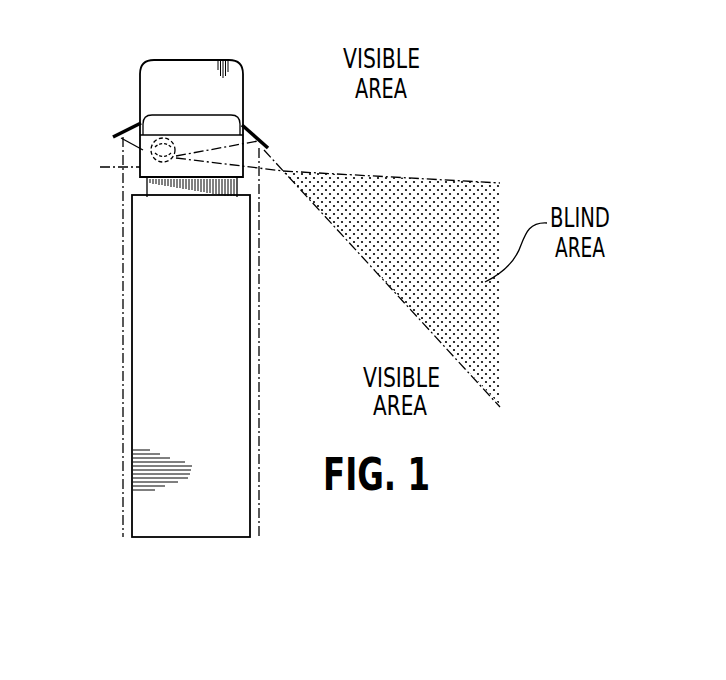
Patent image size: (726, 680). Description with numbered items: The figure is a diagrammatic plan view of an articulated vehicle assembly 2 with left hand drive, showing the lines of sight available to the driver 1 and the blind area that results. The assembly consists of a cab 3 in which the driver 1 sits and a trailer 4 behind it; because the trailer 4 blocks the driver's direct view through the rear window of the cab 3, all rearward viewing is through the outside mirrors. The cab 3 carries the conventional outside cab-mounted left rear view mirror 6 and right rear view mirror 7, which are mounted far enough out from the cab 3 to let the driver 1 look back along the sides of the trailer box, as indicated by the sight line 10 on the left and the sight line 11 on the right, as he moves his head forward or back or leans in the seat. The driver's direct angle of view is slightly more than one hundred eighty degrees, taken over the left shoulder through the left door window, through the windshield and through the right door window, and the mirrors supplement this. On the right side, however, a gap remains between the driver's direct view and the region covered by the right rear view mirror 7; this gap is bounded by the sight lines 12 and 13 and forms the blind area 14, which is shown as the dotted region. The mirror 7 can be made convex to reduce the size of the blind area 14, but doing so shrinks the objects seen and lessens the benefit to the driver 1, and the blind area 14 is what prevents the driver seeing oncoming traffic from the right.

The driver 1 is at (104, 168).
The articulated vehicle assembly 2 is at (257, 66).
The cab 3 is at (178, 62).
The trailer 4 is at (230, 400).
The left rear view mirror 6 is at (118, 132).
The right rear view mirror 7 is at (268, 143).
The sight line 10 is at (121, 268).
The sight line 11 is at (258, 308).
The sight line 12 is at (378, 174).
The sight line 13 is at (360, 253).
The blind area 14 is at (451, 262).